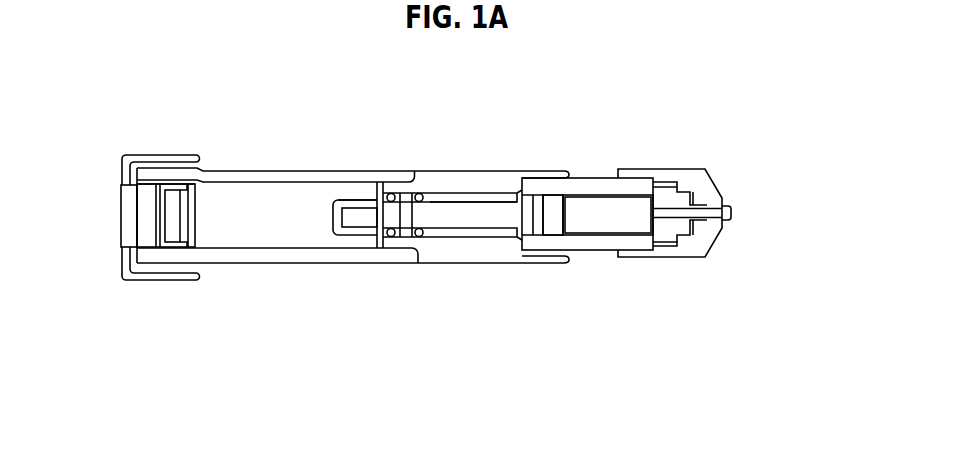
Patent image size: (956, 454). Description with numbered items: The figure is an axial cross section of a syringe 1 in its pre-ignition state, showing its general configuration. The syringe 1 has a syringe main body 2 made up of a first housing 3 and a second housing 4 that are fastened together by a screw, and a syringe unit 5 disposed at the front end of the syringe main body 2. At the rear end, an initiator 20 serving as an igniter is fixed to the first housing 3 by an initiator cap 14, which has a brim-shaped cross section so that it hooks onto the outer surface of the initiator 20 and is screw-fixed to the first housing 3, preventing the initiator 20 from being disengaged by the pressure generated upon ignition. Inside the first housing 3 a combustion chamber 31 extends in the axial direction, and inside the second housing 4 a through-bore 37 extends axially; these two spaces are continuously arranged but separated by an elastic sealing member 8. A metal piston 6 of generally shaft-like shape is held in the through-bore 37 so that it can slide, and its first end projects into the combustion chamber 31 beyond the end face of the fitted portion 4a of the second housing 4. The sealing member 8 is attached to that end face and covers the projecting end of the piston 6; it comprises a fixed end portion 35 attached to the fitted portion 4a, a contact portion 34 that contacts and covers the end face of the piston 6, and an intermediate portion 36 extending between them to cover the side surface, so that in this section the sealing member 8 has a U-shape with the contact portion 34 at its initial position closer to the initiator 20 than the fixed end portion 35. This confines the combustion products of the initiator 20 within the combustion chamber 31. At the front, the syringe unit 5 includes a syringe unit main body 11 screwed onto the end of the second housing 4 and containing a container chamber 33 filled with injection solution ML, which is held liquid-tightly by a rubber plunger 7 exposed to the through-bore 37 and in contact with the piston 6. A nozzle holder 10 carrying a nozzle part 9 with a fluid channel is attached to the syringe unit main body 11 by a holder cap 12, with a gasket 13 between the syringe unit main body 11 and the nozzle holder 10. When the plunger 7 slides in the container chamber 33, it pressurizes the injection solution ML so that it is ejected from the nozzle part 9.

The syringe 1 is at (436, 241).
The syringe main body 2 is at (367, 216).
The first housing 3 is at (324, 264).
The second housing 4 is at (517, 217).
The fitted portion 4a is at (392, 192).
The syringe unit 5 is at (691, 198).
The piston 6 is at (431, 208).
The plunger 7 is at (553, 210).
The sealing member 8 is at (305, 204).
The nozzle part 9 is at (730, 214).
The nozzle holder 10 is at (667, 244).
The syringe unit main body 11 is at (583, 246).
The holder cap 12 is at (700, 174).
The gasket 13 is at (657, 186).
The initiator cap 14 is at (155, 161).
The initiator 20 is at (133, 219).
The combustion chamber 31 is at (270, 212).
The container chamber 33 is at (611, 233).
The contact portion 34 is at (330, 219).
The fixed end portion 35 is at (360, 203).
The intermediate portion 36 is at (352, 200).
The through-bore 37 is at (480, 196).
The injection solution ML is at (607, 208).